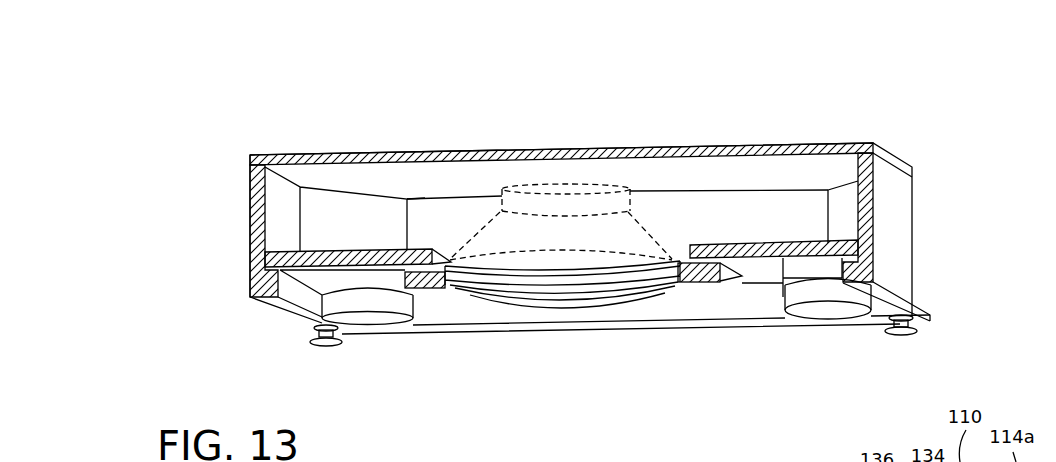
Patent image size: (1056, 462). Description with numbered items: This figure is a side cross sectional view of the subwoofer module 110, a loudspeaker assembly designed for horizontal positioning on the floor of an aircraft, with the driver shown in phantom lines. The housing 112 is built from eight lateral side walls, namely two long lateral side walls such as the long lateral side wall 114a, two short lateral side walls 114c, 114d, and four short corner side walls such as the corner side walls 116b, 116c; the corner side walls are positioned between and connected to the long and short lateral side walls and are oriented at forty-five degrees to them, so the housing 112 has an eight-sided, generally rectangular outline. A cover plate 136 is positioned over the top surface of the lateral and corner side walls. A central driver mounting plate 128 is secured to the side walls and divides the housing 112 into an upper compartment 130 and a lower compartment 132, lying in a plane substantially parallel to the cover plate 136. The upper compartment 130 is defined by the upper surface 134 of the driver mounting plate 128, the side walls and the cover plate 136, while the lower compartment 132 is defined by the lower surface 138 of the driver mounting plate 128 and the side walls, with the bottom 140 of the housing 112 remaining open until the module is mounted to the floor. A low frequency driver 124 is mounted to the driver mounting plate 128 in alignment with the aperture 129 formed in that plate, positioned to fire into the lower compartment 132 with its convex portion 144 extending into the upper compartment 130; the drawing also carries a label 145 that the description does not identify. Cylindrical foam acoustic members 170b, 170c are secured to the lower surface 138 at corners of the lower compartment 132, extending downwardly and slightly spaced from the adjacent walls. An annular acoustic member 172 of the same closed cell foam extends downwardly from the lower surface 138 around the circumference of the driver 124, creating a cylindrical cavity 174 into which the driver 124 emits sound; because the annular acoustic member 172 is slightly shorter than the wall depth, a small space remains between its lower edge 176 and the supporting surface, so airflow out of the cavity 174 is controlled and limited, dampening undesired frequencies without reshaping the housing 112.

The subwoofer module 110 is at (255, 114).
The housing 112 is at (630, 148).
The long lateral side wall 114a is at (760, 208).
The short lateral side wall 114c is at (885, 215).
The short lateral side wall 114d is at (250, 207).
The corner side wall 116b is at (845, 198).
The corner side wall 116c is at (333, 213).
The low frequency driver 124 is at (581, 190).
The central driver mounting plate 128 is at (768, 260).
The aperture 129 is at (408, 193).
The upper compartment 130 is at (695, 200).
The lower compartment 132 is at (747, 312).
The upper surface 134 is at (800, 247).
The cover plate 136 is at (537, 160).
The lower surface 138 is at (317, 280).
The bottom 140 is at (275, 303).
The convex portion 144 is at (447, 266).
The cone portion 145 is at (503, 207).
The foam acoustic member 170b is at (835, 308).
The foam acoustic member 170c is at (393, 318).
The annular acoustic member 172 is at (587, 307).
The cylindrical cavity 174 is at (543, 295).
The lower edge 176 is at (668, 298).